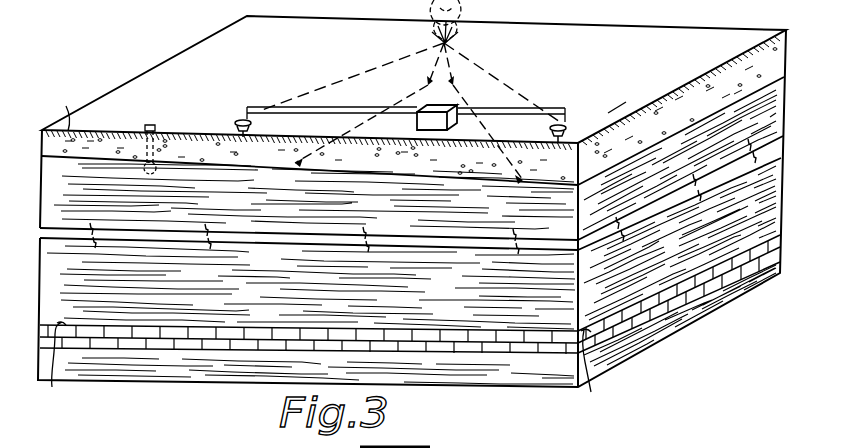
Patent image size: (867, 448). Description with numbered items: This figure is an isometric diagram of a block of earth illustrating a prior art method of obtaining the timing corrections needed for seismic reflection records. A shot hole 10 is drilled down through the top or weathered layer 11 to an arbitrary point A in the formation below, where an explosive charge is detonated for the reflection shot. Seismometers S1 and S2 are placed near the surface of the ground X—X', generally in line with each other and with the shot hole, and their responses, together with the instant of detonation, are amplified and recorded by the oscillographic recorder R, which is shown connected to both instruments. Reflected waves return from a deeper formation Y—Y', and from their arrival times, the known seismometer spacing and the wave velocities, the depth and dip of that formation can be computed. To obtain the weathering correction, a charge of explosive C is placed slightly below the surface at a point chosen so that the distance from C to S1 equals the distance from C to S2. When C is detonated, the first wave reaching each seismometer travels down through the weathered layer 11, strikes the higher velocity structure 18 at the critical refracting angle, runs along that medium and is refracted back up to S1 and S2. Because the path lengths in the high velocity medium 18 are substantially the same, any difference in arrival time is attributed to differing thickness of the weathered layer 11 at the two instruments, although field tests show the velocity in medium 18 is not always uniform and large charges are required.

The shot hole 10 is at (152, 125).
The weathered layer 11 is at (734, 80).
The higher velocity structure 18 is at (786, 146).
The point in the formation below A is at (141, 163).
The charge of explosive C is at (449, 43).
The oscillographic recorder R is at (437, 118).
The seismometer S1 is at (235, 120).
The seismometer S2 is at (566, 122).
The surface of the ground X is at (58, 112).
The surface of the ground X' is at (627, 100).
The reflecting formation Y is at (60, 366).
The reflecting formation Y' is at (595, 373).